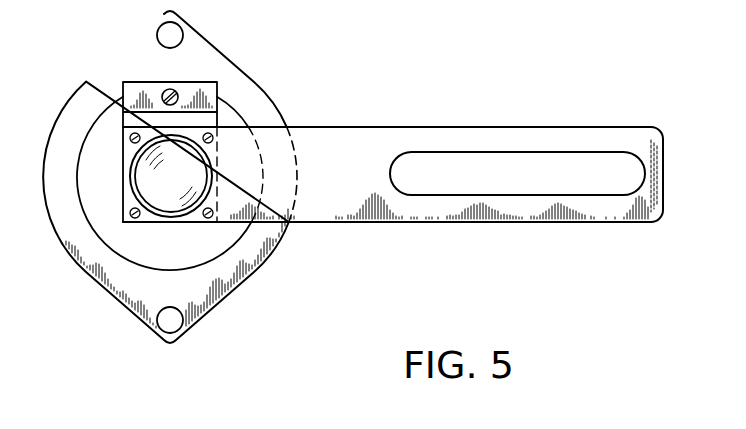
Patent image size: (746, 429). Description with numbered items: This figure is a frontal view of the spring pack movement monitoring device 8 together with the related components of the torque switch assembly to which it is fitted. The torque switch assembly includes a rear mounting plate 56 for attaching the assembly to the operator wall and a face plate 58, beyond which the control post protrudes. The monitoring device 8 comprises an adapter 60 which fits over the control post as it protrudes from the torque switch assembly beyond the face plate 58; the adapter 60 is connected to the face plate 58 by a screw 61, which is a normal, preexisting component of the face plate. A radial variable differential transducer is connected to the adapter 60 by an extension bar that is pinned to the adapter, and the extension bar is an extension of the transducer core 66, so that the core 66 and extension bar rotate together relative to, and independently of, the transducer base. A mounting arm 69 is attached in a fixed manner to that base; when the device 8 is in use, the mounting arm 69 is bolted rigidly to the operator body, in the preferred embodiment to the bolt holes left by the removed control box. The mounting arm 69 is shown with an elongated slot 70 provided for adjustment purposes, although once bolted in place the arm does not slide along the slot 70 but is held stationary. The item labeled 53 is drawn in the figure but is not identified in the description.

The spring pack movement monitoring device 8 is at (307, 95).
The shaft bore 53 is at (170, 192).
The rear mounting plate 56 is at (211, 42).
The face plate 58 is at (238, 112).
The adapter 60 is at (143, 125).
The screw 61 is at (168, 90).
The core 66 is at (132, 190).
The mounting arm 69 is at (483, 127).
The elongated slot 70 is at (548, 152).